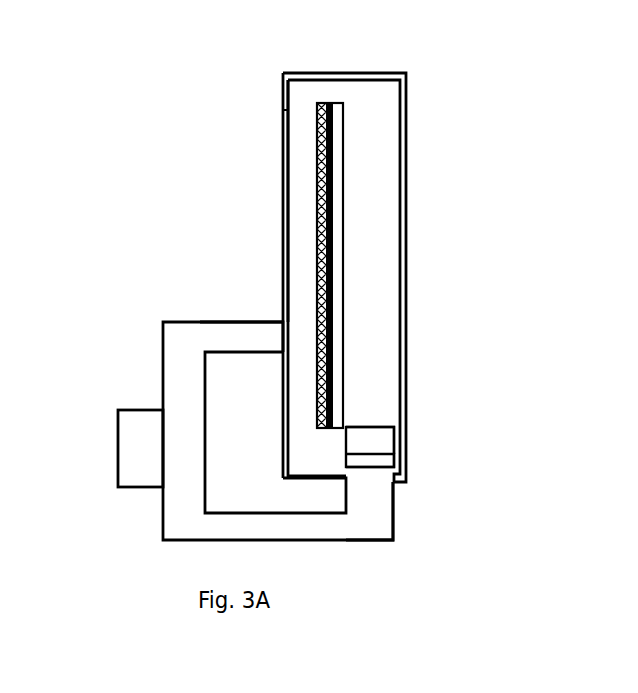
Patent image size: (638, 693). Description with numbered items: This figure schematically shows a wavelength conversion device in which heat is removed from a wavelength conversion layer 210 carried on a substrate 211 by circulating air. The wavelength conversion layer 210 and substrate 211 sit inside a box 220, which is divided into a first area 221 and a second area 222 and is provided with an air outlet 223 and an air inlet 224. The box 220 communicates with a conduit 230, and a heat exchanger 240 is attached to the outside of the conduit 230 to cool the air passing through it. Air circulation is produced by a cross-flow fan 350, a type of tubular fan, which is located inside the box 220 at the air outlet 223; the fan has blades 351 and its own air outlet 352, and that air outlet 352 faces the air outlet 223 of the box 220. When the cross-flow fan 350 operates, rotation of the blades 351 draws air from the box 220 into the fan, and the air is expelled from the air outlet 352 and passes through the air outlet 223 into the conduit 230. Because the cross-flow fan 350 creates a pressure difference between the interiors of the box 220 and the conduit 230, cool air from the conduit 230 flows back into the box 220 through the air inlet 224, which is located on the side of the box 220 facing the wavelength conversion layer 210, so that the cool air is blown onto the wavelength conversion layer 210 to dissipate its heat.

The wavelength conversion layer 210 is at (293, 270).
The substrate 211 is at (335, 125).
The first area 221 is at (234, 279).
The second area 222 is at (285, 279).
The air inlet 224 is at (283, 337).
The conduit 230 is at (185, 360).
The heat exchanger 240 is at (127, 438).
The box 220 is at (283, 408).
The cross-flow fan 350 is at (337, 438).
The blades 351 is at (385, 435).
The air outlet 352 is at (387, 460).
The air outlet 223 is at (375, 485).